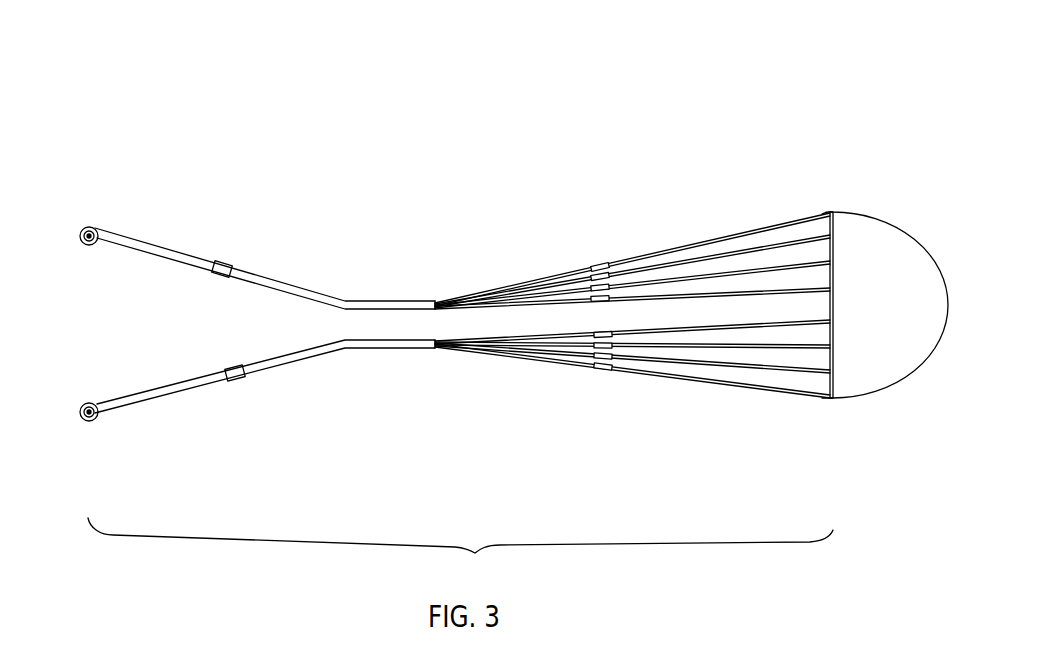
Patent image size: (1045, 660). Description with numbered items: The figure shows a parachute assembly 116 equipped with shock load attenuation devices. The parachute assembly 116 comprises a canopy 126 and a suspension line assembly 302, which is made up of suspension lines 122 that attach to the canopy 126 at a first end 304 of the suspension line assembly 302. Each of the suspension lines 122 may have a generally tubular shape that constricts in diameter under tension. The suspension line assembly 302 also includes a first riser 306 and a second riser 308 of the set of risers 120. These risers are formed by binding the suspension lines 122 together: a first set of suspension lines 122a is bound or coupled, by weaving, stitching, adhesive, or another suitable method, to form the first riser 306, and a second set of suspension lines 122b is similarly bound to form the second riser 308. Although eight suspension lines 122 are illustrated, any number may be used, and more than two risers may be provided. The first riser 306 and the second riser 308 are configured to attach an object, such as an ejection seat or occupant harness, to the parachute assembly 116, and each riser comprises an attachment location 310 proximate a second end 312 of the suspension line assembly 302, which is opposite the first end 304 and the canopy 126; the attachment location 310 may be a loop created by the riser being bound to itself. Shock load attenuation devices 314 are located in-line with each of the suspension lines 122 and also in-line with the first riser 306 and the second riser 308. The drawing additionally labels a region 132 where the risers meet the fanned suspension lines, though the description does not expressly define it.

The parachute assembly 116 is at (812, 86).
The set of risers 120 is at (306, 259).
The suspension lines 122 is at (632, 312).
The first set of suspension lines 122a is at (745, 293).
The second set of suspension lines 122b is at (723, 383).
The canopy 126 is at (865, 222).
The junction 132 is at (445, 354).
The suspension line assembly 302 is at (460, 549).
The first end 304 is at (825, 384).
The first riser 306 is at (265, 283).
The second riser 308 is at (170, 392).
The attachment location 310 is at (80, 233).
The second end 312 is at (76, 424).
The shock load attenuation device 314 is at (222, 266).